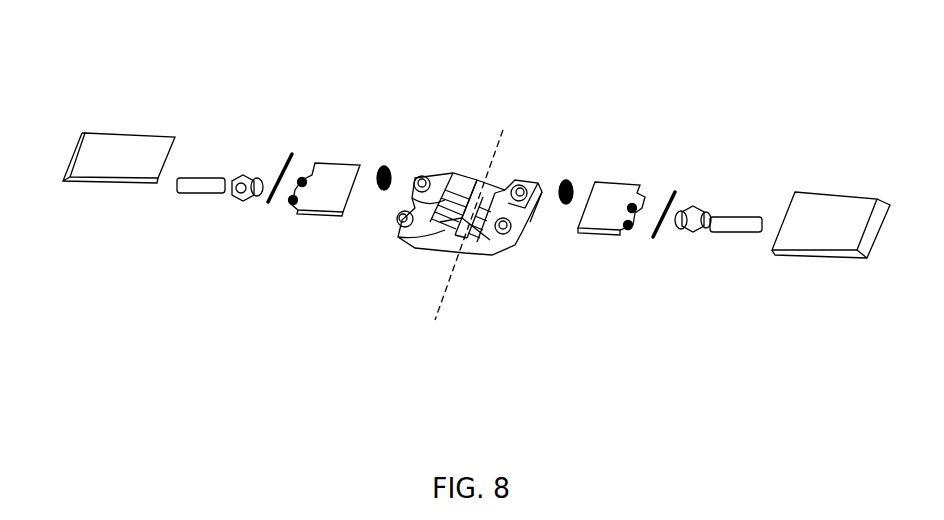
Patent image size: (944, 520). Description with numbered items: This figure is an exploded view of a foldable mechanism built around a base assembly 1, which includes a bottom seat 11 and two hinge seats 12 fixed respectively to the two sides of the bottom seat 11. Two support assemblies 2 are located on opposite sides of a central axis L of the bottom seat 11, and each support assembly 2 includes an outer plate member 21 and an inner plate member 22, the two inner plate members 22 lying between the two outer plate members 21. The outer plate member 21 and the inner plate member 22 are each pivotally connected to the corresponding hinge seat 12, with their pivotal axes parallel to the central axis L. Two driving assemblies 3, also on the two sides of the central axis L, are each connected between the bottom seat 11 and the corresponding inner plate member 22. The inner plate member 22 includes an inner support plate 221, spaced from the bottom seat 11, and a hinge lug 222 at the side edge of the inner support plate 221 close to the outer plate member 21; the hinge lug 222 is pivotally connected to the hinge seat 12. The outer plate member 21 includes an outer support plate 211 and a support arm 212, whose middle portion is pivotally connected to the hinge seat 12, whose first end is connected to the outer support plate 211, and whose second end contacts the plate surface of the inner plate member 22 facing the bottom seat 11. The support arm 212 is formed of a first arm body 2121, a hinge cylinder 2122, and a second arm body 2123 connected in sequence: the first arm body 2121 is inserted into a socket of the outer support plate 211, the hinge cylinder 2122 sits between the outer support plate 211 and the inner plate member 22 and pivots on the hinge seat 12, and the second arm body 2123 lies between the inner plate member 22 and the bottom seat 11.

The base assembly 1 is at (553, 72).
The bottom seat 11 is at (488, 176).
The hinge seat 12 is at (432, 172).
The support assembly 2 is at (268, 337).
The outer plate member 21 is at (163, 275).
The outer support plate 211 is at (112, 156).
The support arm 212 is at (212, 188).
The first arm body 2121 is at (745, 216).
The hinge cylinder 2122 is at (697, 208).
The second arm body 2123 is at (686, 196).
The inner plate member 22 is at (325, 198).
The inner support plate 221 is at (602, 223).
The hinge lug 222 is at (627, 231).
The driving assembly 3 is at (389, 168).
The central axis L is at (469, 235).